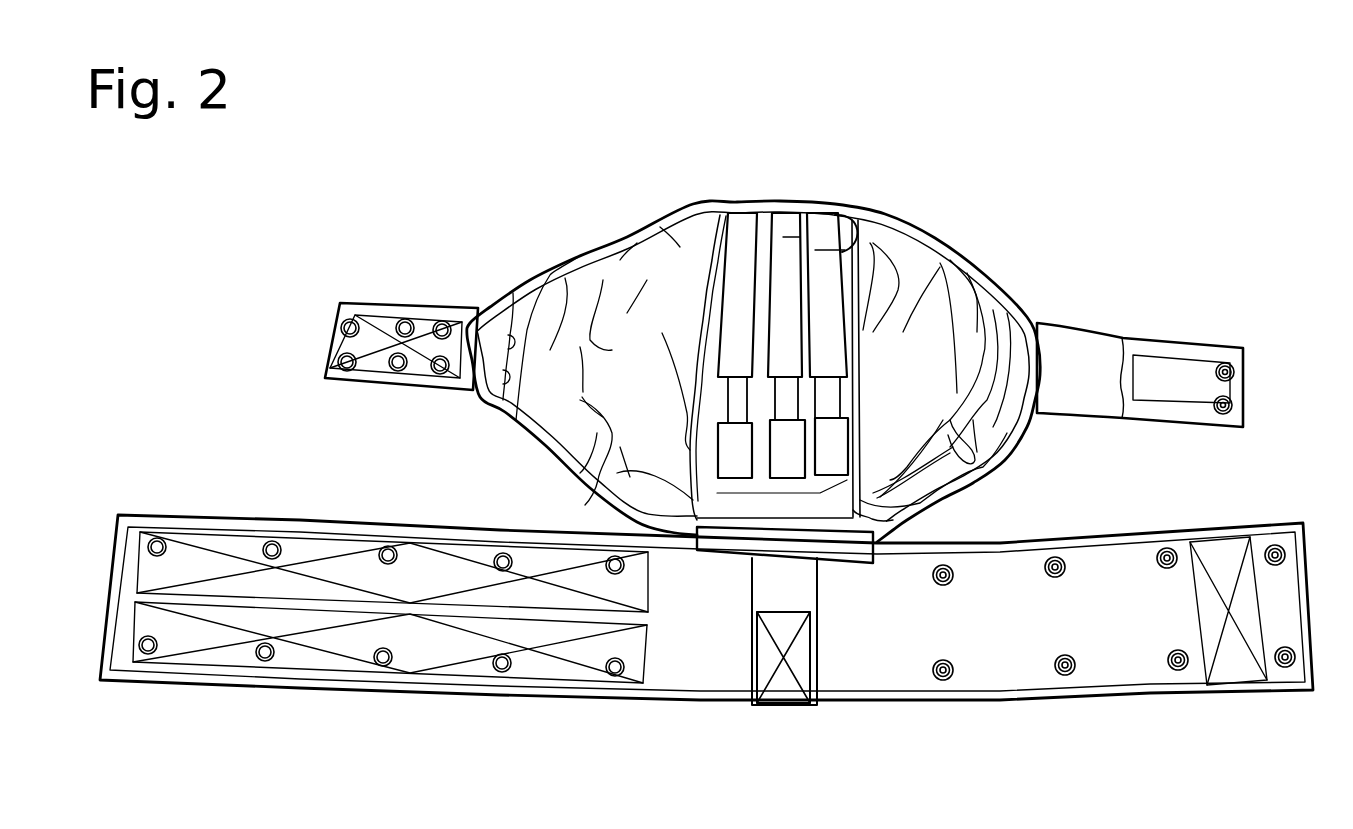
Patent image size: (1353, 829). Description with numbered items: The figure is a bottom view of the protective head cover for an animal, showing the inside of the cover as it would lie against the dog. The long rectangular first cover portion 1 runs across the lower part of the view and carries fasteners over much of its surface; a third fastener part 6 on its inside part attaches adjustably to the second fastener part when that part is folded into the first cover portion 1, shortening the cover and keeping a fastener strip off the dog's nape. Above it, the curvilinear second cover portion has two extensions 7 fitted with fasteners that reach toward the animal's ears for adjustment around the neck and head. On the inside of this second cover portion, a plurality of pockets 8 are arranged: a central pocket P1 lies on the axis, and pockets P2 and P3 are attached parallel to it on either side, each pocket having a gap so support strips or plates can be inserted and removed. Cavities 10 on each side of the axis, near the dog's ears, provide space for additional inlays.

The first cover portion 1 is at (878, 653).
The third fastener part 6 is at (793, 665).
The extensions 7 is at (425, 347).
The pockets 8 is at (812, 232).
The cavities 10 is at (630, 313).
The pocket P1 is at (787, 218).
The pocket P2 is at (740, 218).
The pocket P3 is at (810, 225).